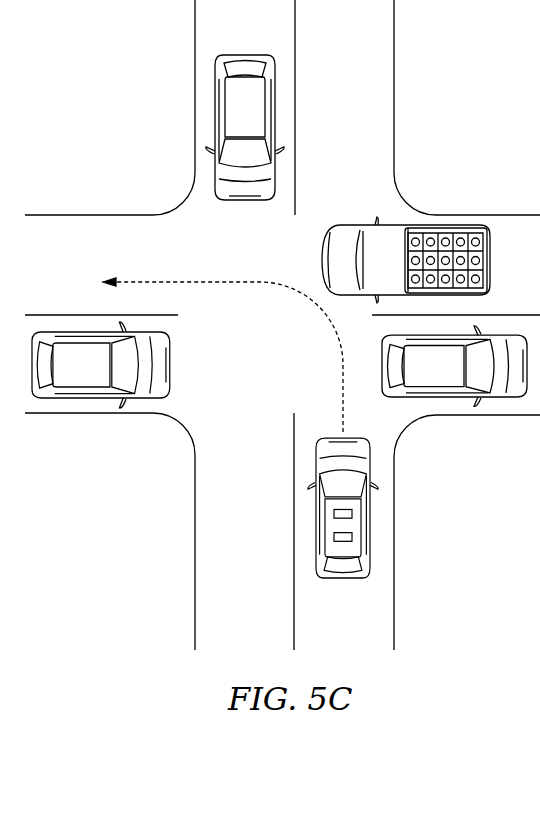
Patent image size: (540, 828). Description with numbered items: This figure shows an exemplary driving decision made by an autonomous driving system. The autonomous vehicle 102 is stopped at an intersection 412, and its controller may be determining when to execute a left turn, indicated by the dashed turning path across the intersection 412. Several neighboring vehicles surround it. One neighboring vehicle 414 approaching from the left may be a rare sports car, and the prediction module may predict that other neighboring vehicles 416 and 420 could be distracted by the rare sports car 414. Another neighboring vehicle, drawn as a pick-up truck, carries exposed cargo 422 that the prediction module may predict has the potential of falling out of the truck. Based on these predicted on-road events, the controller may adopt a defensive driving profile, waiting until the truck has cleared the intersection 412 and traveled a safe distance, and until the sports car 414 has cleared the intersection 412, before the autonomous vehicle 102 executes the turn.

The autonomous vehicle 102 is at (344, 580).
The intersection 412 is at (272, 274).
The neighboring vehicle 414 is at (162, 344).
The neighboring vehicle 416 is at (213, 108).
The neighboring vehicle 420 is at (485, 398).
The exposed cargo 422 is at (420, 230).